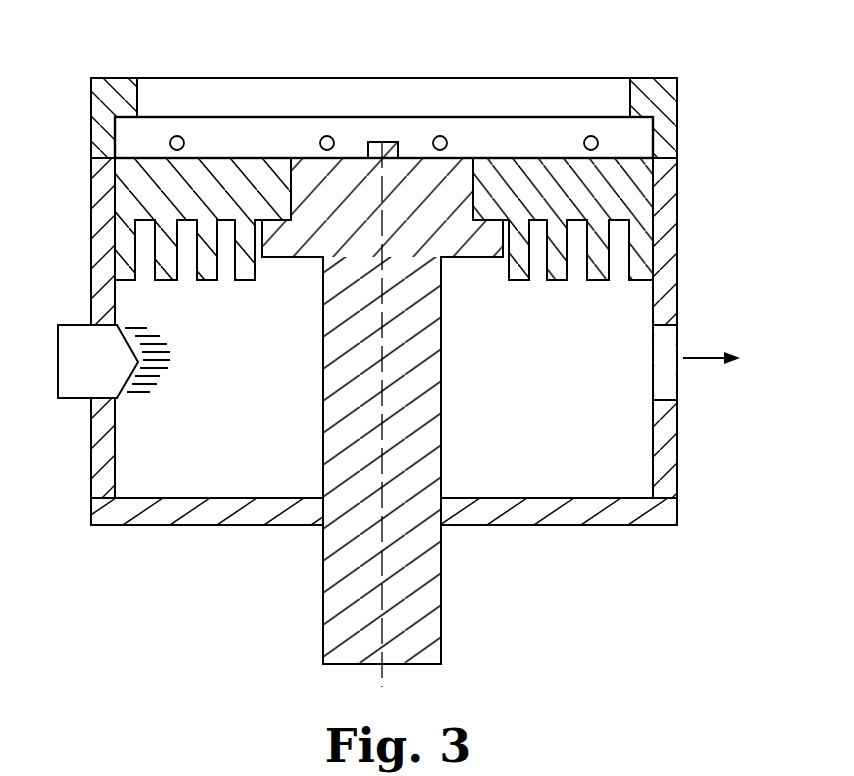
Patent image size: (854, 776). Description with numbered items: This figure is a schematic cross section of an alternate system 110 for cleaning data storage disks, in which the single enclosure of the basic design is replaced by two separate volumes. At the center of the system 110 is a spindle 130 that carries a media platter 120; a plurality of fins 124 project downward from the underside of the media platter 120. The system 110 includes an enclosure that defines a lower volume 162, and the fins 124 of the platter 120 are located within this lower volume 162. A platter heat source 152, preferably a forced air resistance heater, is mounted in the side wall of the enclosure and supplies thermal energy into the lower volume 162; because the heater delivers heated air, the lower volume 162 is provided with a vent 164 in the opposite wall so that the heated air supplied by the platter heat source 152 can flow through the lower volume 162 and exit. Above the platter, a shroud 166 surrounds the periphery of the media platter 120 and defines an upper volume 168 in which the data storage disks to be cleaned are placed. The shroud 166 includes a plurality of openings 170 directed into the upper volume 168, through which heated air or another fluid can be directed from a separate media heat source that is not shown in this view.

The system 110 is at (724, 145).
The media platter 120 is at (221, 167).
The fins 124 is at (530, 277).
The spindle 130 is at (418, 160).
The platter heat source 152 is at (70, 400).
The lower volume 162 is at (530, 421).
The vent 164 is at (665, 377).
The shroud 166 is at (678, 92).
The upper volume 168 is at (545, 135).
The openings 170 is at (444, 136).